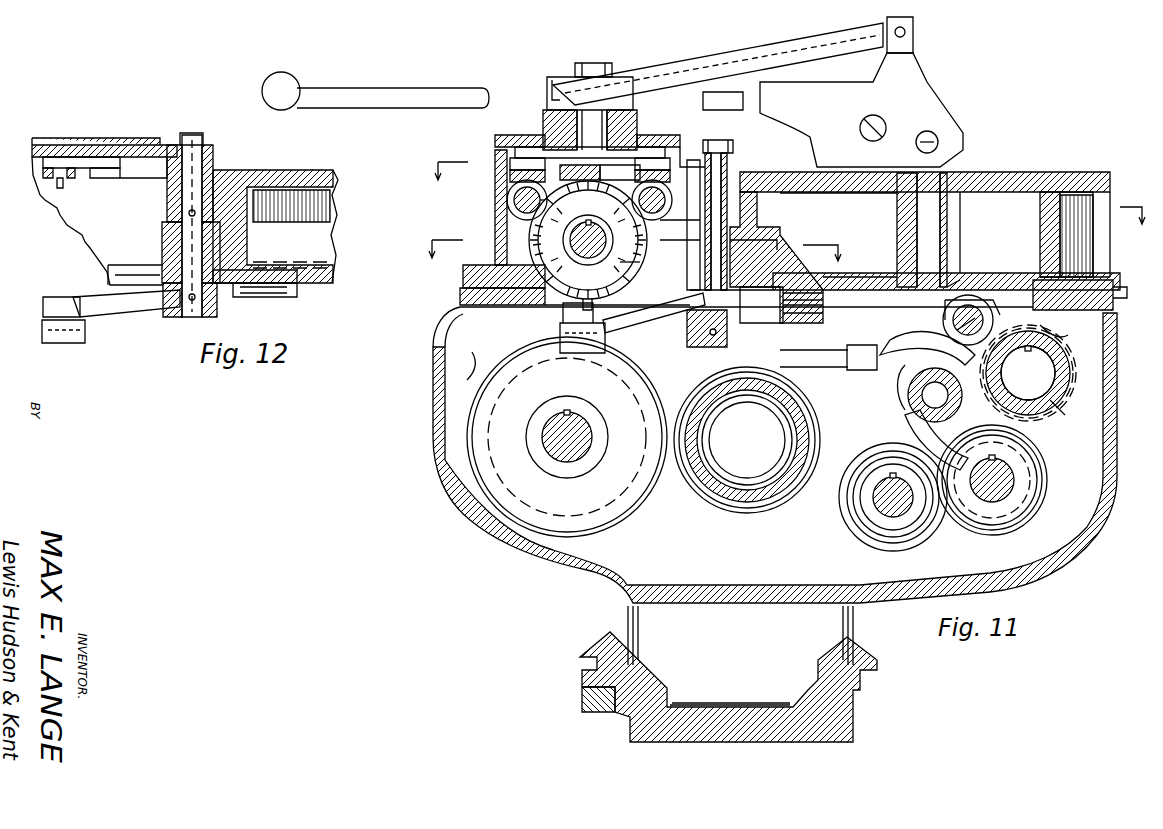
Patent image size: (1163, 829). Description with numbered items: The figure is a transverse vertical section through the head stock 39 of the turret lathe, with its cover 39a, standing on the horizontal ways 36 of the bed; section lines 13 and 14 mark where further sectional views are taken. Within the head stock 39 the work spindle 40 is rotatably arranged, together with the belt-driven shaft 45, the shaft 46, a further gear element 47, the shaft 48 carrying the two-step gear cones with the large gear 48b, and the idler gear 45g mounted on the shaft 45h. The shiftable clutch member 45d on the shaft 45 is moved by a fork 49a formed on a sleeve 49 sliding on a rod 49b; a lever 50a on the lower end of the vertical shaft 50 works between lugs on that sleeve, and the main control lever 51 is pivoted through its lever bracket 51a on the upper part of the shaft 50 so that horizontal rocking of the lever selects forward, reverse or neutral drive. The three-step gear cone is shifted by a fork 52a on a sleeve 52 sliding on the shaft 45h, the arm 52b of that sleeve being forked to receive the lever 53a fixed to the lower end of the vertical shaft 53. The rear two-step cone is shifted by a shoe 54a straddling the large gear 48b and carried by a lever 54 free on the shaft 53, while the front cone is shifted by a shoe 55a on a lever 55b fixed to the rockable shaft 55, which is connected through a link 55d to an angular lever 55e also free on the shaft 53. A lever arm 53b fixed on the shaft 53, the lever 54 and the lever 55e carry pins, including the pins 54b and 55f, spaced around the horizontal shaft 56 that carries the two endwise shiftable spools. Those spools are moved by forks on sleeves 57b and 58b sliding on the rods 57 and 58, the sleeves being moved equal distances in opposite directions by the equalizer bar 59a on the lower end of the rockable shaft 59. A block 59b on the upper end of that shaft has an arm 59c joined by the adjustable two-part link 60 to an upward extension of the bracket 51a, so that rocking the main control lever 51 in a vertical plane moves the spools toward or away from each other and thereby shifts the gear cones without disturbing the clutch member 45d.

In FIG. 11, the section line 13— 13 is at (779, 204).
In FIG. 11, the section line 14— 14 is at (630, 253).
In FIG. 11, the horizontal ways 36 is at (862, 650).
In FIG. 11, the head stock 39 is at (433, 335).
In FIG. 11, the cover 39a is at (1062, 182).
In FIG. 12, the cover 39a is at (290, 180).
In FIG. 11, the work spindle 40 is at (720, 405).
In FIG. 11, the shaft 45 is at (1045, 375).
In FIG. 11, the shiftable clutch member 45d is at (1070, 414).
In FIG. 11, the idler gear 45g is at (941, 327).
In FIG. 11, the shaft 45h is at (900, 392).
In FIG. 11, the shaft 46 is at (1010, 478).
In FIG. 11, the gear 47 is at (885, 505).
In FIG. 11, the shaft 48 is at (585, 450).
In FIG. 11, the large gear 48b is at (483, 375).
In FIG. 11, the sleeve 49 is at (990, 308).
In FIG. 11, the fork 49a is at (1064, 326).
In FIG. 11, the rod 49b is at (970, 298).
In FIG. 11, the vertically extending shaft 50 is at (925, 228).
In FIG. 11, the lever 50a is at (950, 285).
In FIG. 11, the main control lever 51 is at (390, 103).
In FIG. 11, the lever bracket 51a is at (935, 120).
In FIG. 11, the sleeve 52 is at (905, 405).
In FIG. 11, the fork 52a is at (905, 432).
In FIG. 11, the arm 52b is at (895, 348).
In FIG. 11, the vertically extending shaft 53 is at (640, 250).
In FIG. 11, the lever 53a is at (845, 348).
In FIG. 11, the lever arm 53b is at (670, 255).
In FIG. 11, the lever 54 is at (670, 320).
In FIG. 11, the shoe 54a is at (565, 345).
In FIG. 11, the pin 54b is at (579, 286).
In FIG. 12, the rockable shaft 55 is at (183, 245).
In FIG. 12, the shoe 55a is at (55, 338).
In FIG. 12, the lever 55b is at (138, 303).
In FIG. 12, the link 55d is at (85, 157).
In FIG. 11, the angular lever 55e is at (622, 185).
In FIG. 12, the angular lever 55e is at (165, 176).
In FIG. 11, the pin 55f is at (596, 190).
In FIG. 12, the pin 55f is at (60, 188).
In FIG. 11, the shaft 56 is at (572, 240).
In FIG. 11, the rod 57 is at (685, 170).
In FIG. 11, the sleeve 57b is at (780, 240).
In FIG. 11, the rod 58 is at (515, 212).
In FIG. 11, the sleeve 58b is at (525, 203).
In FIG. 11, the rockable shaft 59 is at (590, 130).
In FIG. 11, the equalizer bar 59a is at (545, 138).
In FIG. 11, the block 59b is at (555, 80).
In FIG. 11, the arm 59c is at (548, 102).
In FIG. 11, the two-part link 60 is at (733, 55).